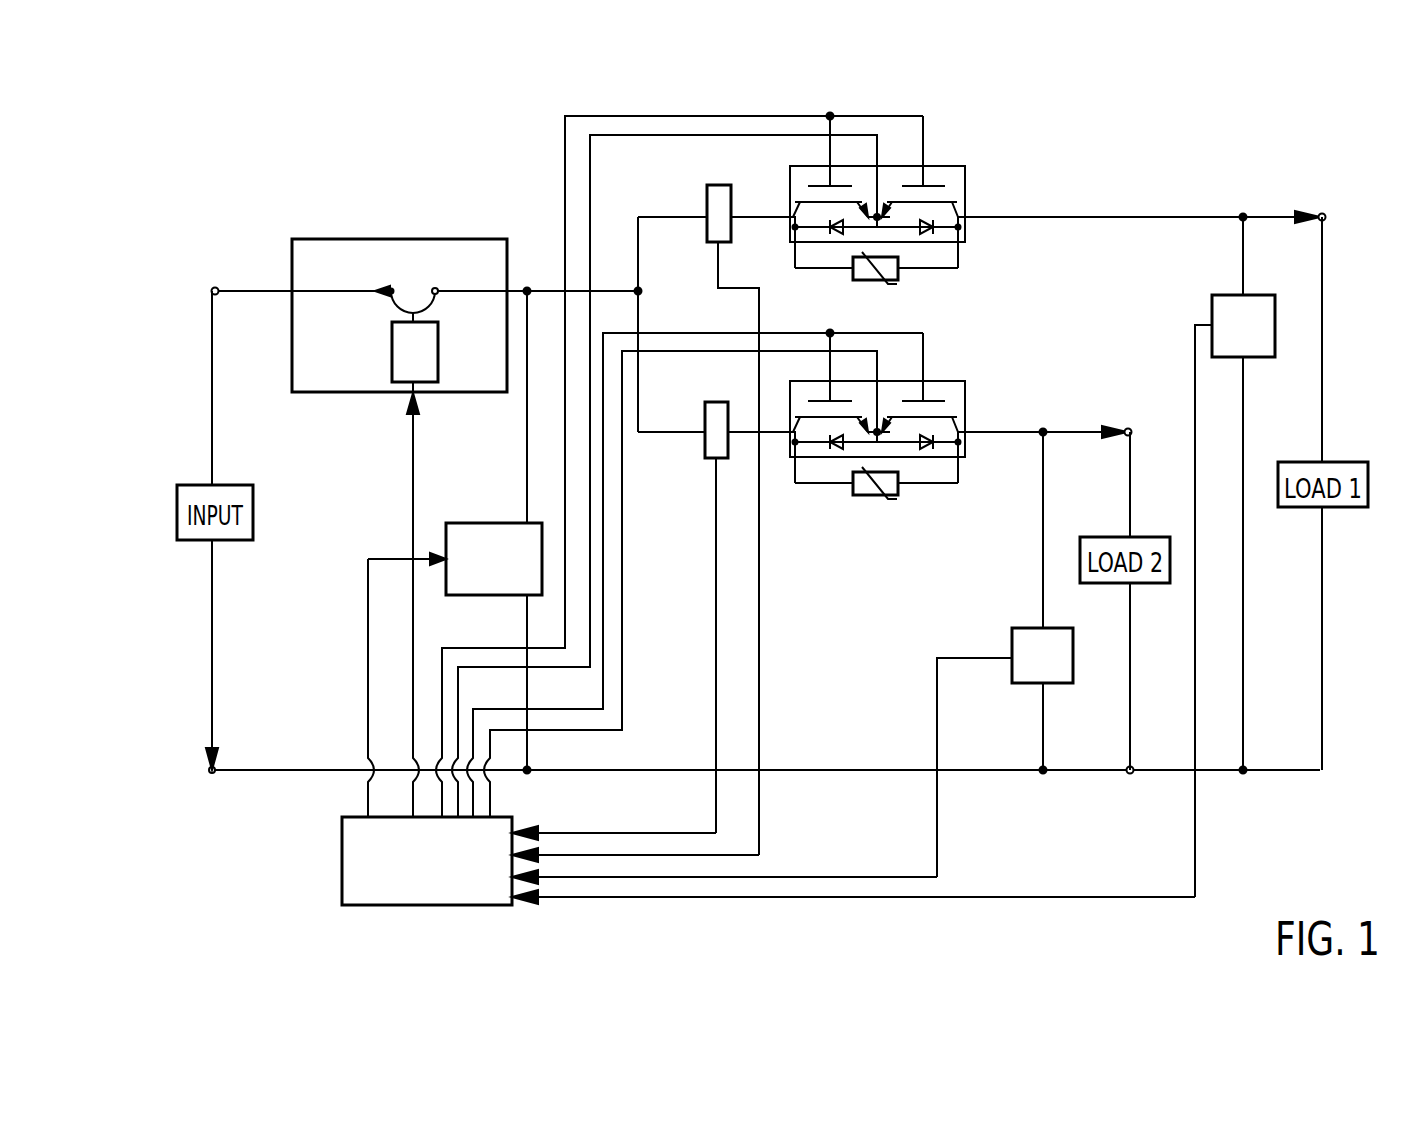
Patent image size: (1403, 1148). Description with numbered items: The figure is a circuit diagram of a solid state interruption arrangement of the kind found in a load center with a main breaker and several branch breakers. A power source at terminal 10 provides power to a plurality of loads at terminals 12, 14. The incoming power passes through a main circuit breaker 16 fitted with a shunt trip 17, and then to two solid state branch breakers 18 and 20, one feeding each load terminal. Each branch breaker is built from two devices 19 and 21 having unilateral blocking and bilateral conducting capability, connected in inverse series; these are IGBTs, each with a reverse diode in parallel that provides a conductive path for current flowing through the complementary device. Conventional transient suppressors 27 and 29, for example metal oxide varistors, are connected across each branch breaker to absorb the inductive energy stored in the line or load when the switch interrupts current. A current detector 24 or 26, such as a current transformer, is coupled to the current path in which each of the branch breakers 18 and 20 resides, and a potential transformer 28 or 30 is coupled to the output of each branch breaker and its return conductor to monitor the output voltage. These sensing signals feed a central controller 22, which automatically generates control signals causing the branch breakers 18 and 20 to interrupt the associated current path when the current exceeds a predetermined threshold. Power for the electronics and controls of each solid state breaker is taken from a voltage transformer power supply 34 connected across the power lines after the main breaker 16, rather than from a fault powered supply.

The terminal 10 is at (215, 288).
The terminal 12 is at (1323, 214).
The terminal 14 is at (1130, 430).
The main circuit breaker 16 is at (350, 395).
The shunt trip 17 is at (440, 358).
The solid state branch breaker 18 is at (886, 220).
The device with unilateral blocking and bilateral conducting capability 19 is at (795, 244).
The solid state branch breaker 20 is at (908, 441).
The device with unilateral blocking and bilateral conducting capability 21 is at (958, 244).
The central controller 22 is at (340, 900).
The current detector 24 is at (706, 206).
The current detector 26 is at (705, 440).
The transient suppressor 27 is at (880, 284).
The potential transformer 28 is at (1210, 305).
The transient suppressor 29 is at (882, 499).
The potential transformer 30 is at (1052, 690).
The voltage transformer power supply 34 is at (467, 522).